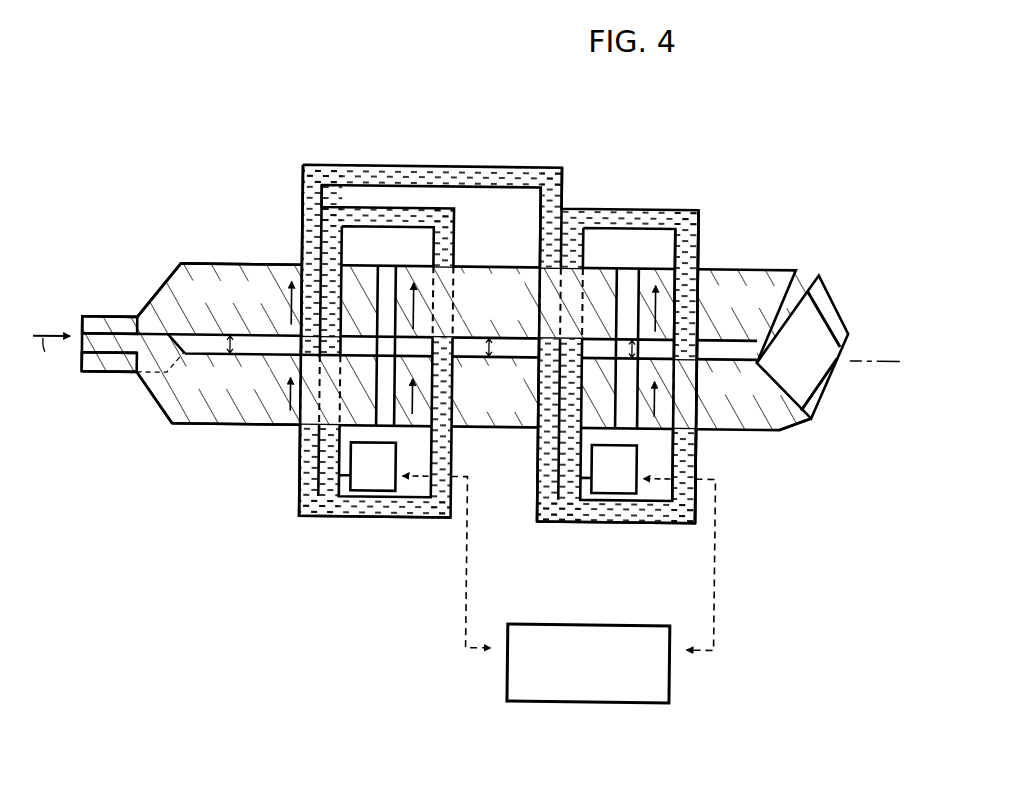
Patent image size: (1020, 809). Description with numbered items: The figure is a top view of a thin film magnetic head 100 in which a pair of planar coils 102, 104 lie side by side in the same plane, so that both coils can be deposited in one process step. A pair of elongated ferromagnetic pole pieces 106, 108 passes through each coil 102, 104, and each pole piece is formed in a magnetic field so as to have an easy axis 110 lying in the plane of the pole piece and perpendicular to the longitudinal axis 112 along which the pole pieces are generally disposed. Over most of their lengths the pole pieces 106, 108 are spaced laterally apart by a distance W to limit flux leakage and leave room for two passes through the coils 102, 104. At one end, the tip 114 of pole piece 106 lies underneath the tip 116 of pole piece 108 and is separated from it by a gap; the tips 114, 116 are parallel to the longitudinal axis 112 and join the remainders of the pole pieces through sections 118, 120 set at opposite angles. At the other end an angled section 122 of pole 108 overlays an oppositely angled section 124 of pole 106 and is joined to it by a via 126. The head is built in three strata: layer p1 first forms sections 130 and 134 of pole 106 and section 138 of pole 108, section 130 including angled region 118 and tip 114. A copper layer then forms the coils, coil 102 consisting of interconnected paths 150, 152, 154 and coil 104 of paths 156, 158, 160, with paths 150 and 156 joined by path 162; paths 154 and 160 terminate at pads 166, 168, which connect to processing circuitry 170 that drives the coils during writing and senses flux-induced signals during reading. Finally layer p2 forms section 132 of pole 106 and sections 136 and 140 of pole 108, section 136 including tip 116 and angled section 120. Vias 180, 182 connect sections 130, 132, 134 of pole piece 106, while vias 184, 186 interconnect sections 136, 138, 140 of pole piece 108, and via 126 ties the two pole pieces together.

The thin film magnetic head 100 is at (662, 164).
The planar coil 102 is at (390, 525).
The planar coil 104 is at (620, 528).
The pole piece 106 is at (206, 254).
The pole piece 108 is at (263, 480).
The easy axis 110 is at (294, 280).
The longitudinal axis 112 is at (856, 358).
The tip 114 is at (110, 326).
The tip 116 is at (81, 352).
The angled section 118 is at (162, 293).
The angled section 120 is at (161, 400).
The angled section 122 is at (790, 420).
The angled section 124 is at (819, 398).
The via 126 is at (832, 330).
The section 130 is at (249, 280).
The section 132 is at (489, 268).
The section 134 is at (762, 268).
The section 136 is at (242, 428).
The section 138 is at (519, 430).
The section 140 is at (744, 433).
The path 150 is at (301, 226).
The path 152 is at (455, 236).
The path 154 is at (352, 226).
The path 156 is at (548, 214).
The path 158 is at (700, 232).
The path 160 is at (589, 246).
The path 162 is at (362, 168).
The pad 166 is at (384, 467).
The pad 168 is at (625, 470).
The processing circuitry 170 is at (574, 623).
The via 180 is at (386, 270).
The via 182 is at (624, 270).
The via 184 is at (395, 430).
The via 186 is at (640, 431).